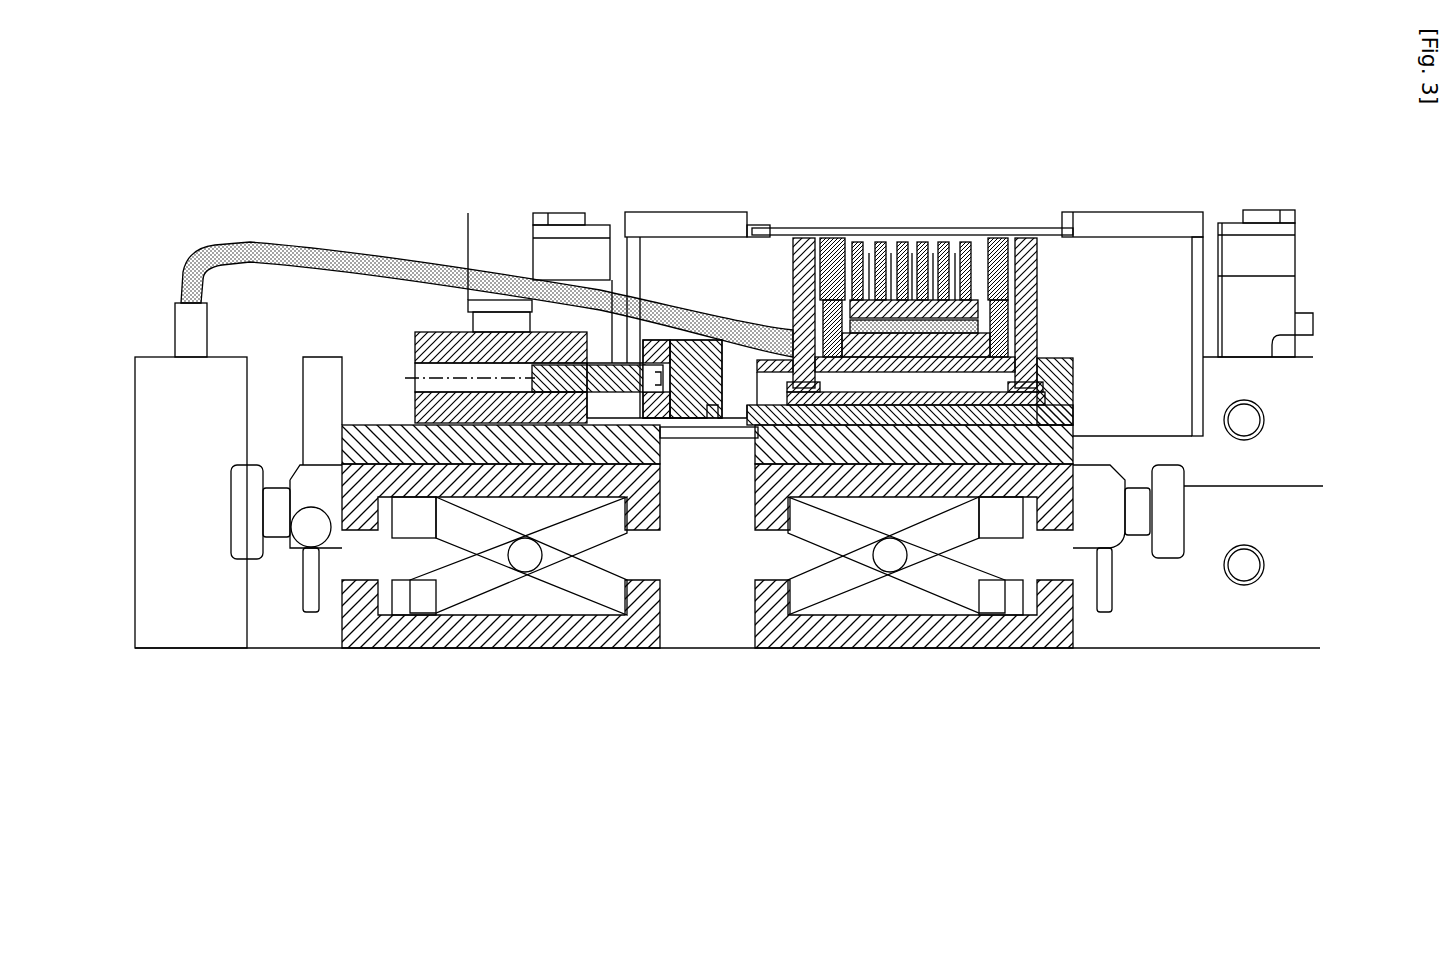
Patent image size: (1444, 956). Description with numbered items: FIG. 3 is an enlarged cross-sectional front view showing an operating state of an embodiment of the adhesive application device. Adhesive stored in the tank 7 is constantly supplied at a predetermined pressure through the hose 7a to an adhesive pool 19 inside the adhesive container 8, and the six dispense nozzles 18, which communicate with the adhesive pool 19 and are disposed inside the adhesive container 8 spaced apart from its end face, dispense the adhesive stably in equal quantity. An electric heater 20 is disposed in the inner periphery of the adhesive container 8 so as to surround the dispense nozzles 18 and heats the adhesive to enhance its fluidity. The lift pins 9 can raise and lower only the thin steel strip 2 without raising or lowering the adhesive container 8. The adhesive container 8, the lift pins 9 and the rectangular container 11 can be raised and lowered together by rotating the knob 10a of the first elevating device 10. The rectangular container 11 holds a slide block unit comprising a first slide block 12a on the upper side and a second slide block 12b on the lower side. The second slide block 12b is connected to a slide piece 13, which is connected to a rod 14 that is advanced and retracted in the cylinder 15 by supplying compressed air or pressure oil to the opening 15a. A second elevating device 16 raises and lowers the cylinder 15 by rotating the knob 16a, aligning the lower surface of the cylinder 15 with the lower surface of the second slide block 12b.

The thin steel strip 2 is at (975, 232).
The tank 7 is at (157, 355).
The hose 7a is at (235, 258).
The adhesive container 8 is at (830, 300).
The lift pins 9 is at (793, 345).
The first elevating device 10 is at (1090, 618).
The knob 10a is at (1187, 510).
The rectangular container 11 is at (1015, 360).
The first slide block 12a is at (1077, 367).
The second slide block 12b is at (1077, 405).
The slide piece 13 is at (690, 440).
The rod 14 is at (615, 395).
The cylinder 15 is at (440, 335).
The opening 15a is at (433, 362).
The second elevating device 16 is at (336, 625).
The knob 16a is at (230, 510).
The dispense nozzles 18 is at (965, 242).
The adhesive pool 19 is at (1010, 340).
The electric heater 20 is at (745, 412).